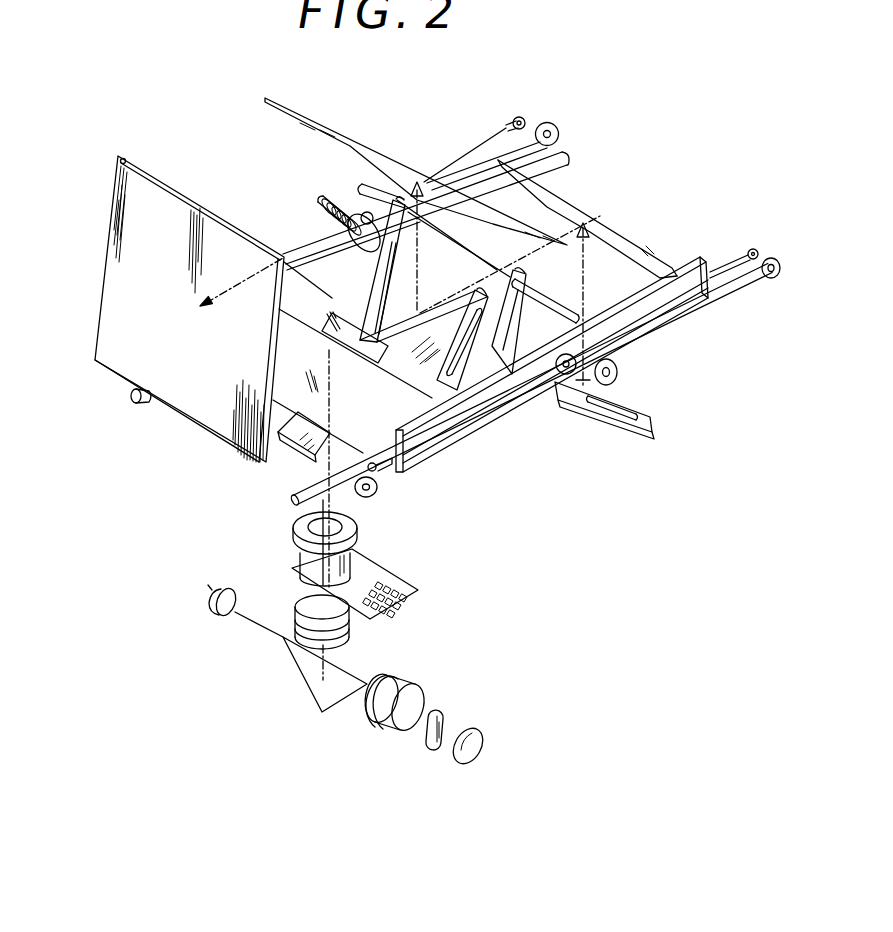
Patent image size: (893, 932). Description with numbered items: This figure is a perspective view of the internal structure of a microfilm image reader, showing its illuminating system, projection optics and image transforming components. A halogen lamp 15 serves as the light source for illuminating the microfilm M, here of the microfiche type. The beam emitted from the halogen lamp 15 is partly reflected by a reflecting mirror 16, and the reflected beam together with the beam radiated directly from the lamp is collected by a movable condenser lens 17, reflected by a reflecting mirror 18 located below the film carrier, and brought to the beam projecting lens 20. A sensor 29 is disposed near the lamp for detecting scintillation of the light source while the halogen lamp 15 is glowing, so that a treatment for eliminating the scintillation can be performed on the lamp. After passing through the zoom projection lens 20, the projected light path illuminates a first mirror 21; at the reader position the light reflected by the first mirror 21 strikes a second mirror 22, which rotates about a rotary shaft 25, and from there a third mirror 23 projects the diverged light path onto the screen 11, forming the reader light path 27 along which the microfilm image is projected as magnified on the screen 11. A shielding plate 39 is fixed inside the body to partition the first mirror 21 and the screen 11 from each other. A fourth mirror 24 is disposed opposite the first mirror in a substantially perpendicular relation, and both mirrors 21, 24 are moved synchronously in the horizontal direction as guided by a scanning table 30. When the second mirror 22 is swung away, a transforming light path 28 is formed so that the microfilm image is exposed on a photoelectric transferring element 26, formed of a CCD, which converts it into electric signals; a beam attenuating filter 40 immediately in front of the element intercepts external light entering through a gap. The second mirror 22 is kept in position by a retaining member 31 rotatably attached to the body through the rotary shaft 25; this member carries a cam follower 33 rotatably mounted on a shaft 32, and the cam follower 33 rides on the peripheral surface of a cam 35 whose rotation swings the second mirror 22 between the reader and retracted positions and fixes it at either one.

The screen 11 is at (100, 334).
The reader light path 27 is at (235, 290).
The third mirror 23 is at (413, 167).
The transforming light path 28 is at (593, 245).
The fourth mirror 24 is at (643, 257).
The cam follower 33 is at (362, 245).
The cam 35 is at (333, 263).
The shaft 32 is at (343, 240).
The rotary shaft 25 is at (580, 305).
The retaining member 31 is at (498, 343).
The second mirror 22 is at (440, 380).
The shielding plate 39 is at (293, 387).
The first mirror 21 is at (300, 447).
The scanning table 30 is at (487, 410).
The photoelectric transferring element 26 is at (647, 437).
The beam attenuating filter 40 is at (600, 410).
The beam projecting lens 20 is at (335, 524).
The microfilm M is at (375, 568).
The sensor 29 is at (222, 618).
The reflecting mirror 18 is at (338, 690).
The movable condenser lens 17 is at (389, 728).
The halogen lamp 15 is at (432, 750).
The reflecting mirror 16 is at (466, 764).